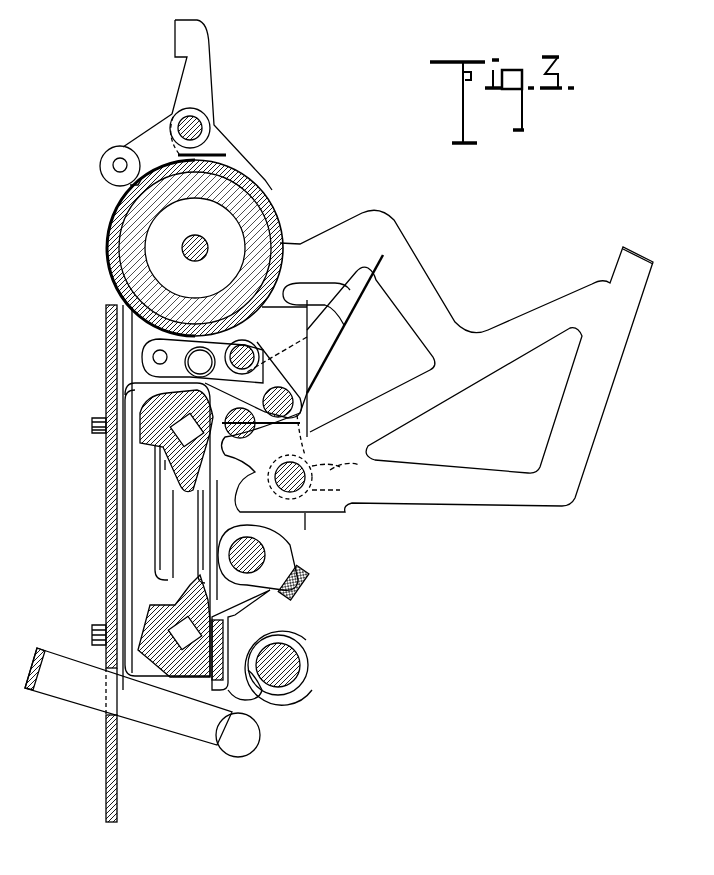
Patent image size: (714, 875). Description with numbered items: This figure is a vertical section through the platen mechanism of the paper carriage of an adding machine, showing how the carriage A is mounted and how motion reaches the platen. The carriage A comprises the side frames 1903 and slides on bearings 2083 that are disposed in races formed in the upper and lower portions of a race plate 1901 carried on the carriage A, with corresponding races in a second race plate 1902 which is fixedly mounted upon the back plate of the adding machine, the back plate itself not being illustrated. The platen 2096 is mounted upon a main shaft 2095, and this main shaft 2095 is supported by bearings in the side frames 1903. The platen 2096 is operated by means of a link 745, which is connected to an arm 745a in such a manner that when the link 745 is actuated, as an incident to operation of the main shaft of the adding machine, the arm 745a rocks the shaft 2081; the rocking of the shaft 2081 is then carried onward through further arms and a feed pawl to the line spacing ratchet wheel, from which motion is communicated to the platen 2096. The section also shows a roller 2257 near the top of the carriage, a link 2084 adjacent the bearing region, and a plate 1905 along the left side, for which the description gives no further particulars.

The roller 2257 is at (112, 147).
The platen 2096 is at (258, 183).
The main shaft 2095 is at (207, 231).
The link 2084 is at (228, 366).
The race plate 1902 is at (145, 442).
The bearings 2083 is at (160, 617).
The race plate 1901 is at (163, 467).
The plate 1905 is at (110, 527).
The carriage A is at (220, 577).
The side frames 1903 is at (293, 618).
The shaft 2081 is at (297, 683).
The arm 745a is at (266, 712).
The link 745 is at (163, 720).